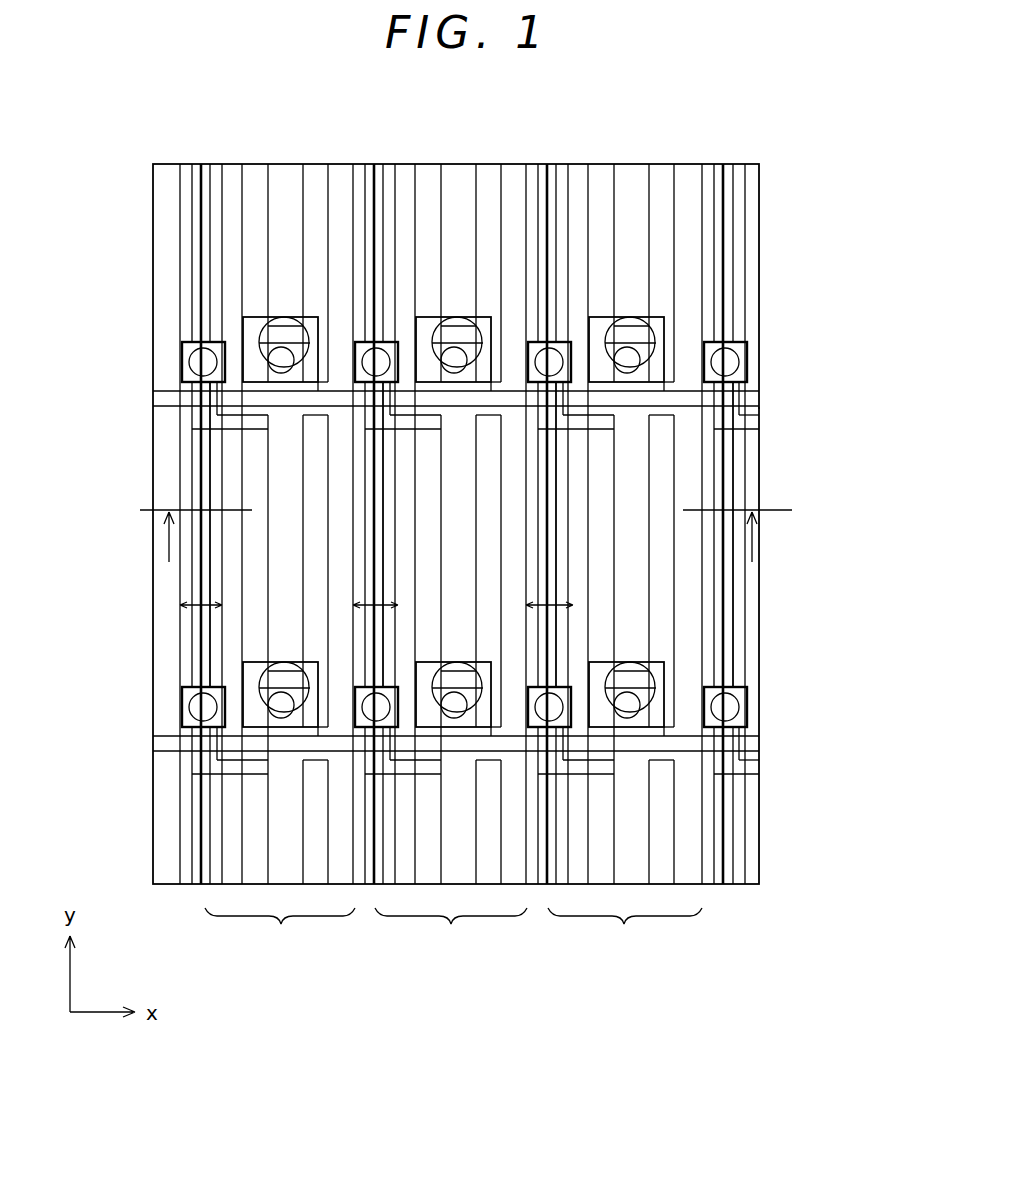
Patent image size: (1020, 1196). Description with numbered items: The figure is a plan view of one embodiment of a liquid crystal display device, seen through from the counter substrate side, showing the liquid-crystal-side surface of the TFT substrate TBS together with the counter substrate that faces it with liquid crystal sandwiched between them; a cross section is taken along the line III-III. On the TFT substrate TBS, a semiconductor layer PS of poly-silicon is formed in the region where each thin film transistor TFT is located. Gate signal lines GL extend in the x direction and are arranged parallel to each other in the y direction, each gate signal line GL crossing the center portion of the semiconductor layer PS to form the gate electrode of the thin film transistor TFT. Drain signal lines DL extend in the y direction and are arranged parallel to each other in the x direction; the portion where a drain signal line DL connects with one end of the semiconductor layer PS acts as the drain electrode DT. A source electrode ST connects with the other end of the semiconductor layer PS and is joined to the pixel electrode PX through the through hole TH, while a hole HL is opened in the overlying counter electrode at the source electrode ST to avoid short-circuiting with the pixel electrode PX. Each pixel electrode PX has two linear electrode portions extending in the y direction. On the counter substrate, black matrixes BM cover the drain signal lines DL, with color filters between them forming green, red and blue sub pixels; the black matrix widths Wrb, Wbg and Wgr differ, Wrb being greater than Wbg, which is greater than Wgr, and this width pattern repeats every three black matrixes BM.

The gate signal line GL is at (182, 393).
The drain signal line DL is at (188, 216).
The pixel electrode PX is at (250, 479).
The drain electrode DT is at (186, 688).
The source electrode ST is at (268, 716).
The through hole TH is at (740, 706).
The hole HL is at (660, 682).
The thin film transistor TFT is at (231, 779).
The semiconductor layer PS is at (577, 778).
The TFT substrate TBS is at (759, 408).
The black matrix BM is at (467, 127).
The width of black matrix between blue and green sub pixels Wbg is at (176, 605).
The width of black matrix between green and red sub pixels Wgr is at (402, 606).
The width of black matrix between red and blue sub pixels Wrb is at (576, 606).
The line III- III is at (455, 536).